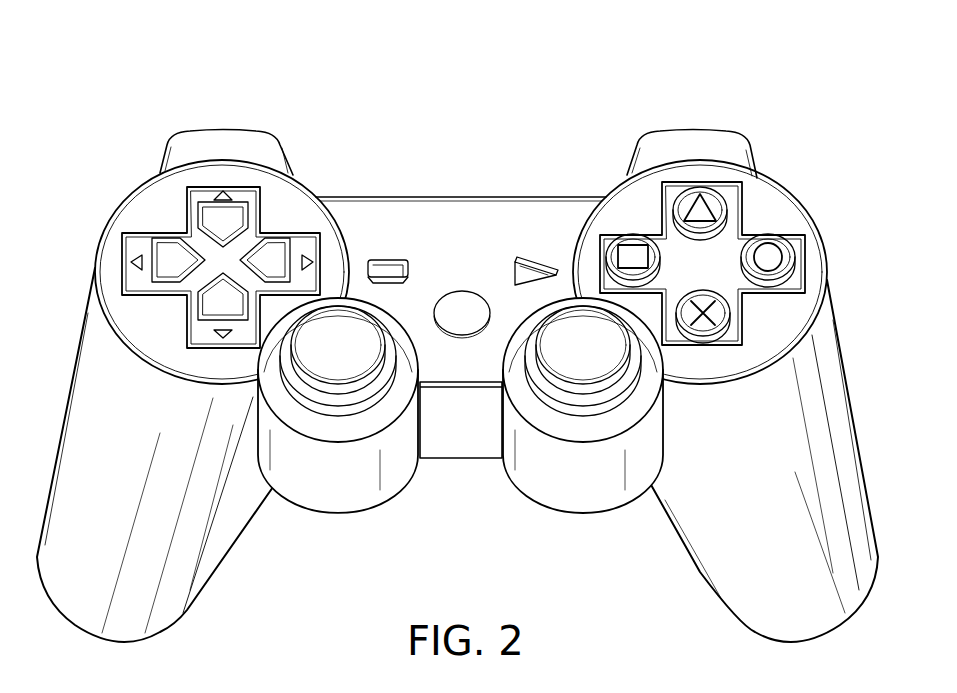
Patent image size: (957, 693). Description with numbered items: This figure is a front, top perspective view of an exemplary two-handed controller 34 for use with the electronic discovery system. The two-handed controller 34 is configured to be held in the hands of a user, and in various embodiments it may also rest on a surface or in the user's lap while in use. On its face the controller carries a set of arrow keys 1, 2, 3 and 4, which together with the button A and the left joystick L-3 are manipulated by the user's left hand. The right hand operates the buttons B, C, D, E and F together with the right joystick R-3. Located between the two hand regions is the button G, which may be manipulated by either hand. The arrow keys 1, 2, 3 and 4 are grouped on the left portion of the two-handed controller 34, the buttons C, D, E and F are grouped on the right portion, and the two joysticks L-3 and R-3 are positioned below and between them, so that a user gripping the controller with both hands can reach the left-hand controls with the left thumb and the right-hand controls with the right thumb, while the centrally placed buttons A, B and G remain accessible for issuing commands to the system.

The two-handed controller 34 is at (543, 77).
The arrow key 1 is at (232, 212).
The arrow key 2 is at (268, 255).
The arrow key 3 is at (215, 297).
The arrow key 4 is at (168, 255).
The button A is at (390, 260).
The button B is at (530, 260).
The button C is at (634, 240).
The button D is at (715, 200).
The button E is at (780, 255).
The button F is at (710, 320).
The button G is at (460, 303).
The joystick L-3 is at (332, 365).
The joystick R-3 is at (585, 362).